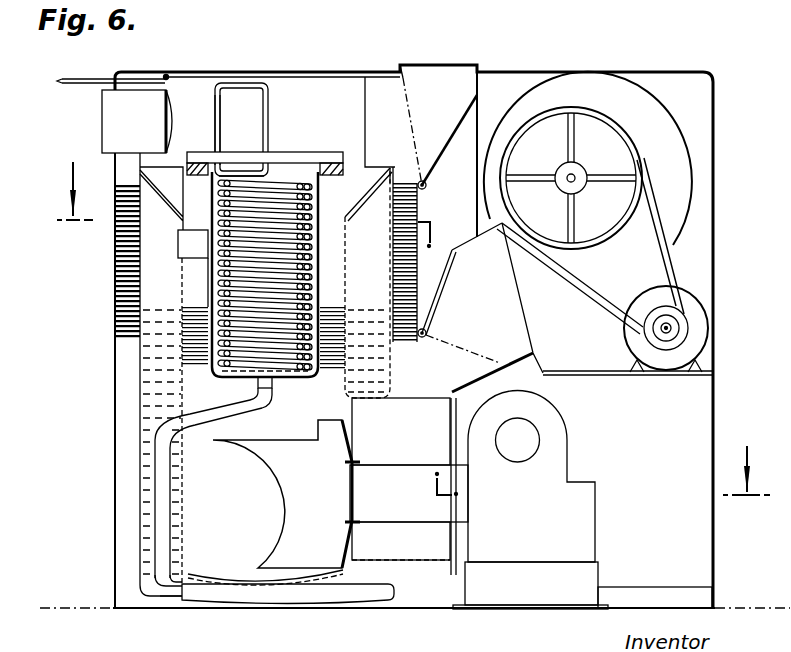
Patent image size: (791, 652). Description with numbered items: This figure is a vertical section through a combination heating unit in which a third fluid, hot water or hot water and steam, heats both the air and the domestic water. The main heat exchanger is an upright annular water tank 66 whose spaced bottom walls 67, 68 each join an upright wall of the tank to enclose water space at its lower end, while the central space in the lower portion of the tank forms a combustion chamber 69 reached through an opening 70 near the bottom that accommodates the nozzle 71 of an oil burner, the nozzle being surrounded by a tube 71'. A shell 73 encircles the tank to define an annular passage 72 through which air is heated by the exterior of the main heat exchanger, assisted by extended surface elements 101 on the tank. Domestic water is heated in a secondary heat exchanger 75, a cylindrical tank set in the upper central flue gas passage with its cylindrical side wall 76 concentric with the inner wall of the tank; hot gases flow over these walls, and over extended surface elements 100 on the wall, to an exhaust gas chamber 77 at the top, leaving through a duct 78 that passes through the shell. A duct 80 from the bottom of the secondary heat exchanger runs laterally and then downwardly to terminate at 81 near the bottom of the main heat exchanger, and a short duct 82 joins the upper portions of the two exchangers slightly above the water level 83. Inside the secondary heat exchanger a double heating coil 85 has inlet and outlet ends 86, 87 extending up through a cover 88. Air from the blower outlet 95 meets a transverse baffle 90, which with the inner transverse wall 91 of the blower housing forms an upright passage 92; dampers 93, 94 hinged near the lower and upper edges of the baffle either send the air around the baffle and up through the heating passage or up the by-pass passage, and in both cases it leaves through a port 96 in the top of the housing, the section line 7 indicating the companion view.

The section line 7- 7 is at (413, 345).
The annular water tank 66 is at (128, 508).
The bottom wall 67 is at (266, 582).
The bottom wall 68 is at (236, 606).
The combustion chamber 69 is at (300, 417).
The opening 70 is at (380, 402).
The nozzle 71 is at (406, 492).
The tube 71' is at (401, 544).
The annular passage 72 is at (115, 397).
The shell 73 is at (116, 466).
The secondary heat exchanger 75 is at (313, 141).
The cylindrical side wall 76 is at (323, 207).
The exhaust gas chamber 77 is at (288, 88).
The duct 78 is at (110, 113).
The duct 80 is at (238, 406).
The duct terminus 81 is at (183, 582).
The short duct 82 is at (203, 228).
The water level 83 is at (166, 306).
The double heating coil 85 is at (287, 180).
The inlet end 86 is at (263, 109).
The outlet end 87 is at (214, 109).
The cover 88 is at (200, 156).
The transverse baffle 90 is at (437, 205).
The inner transverse wall 91 is at (476, 182).
The upright passage 92 is at (462, 231).
The damper 93 is at (441, 278).
The damper 94 is at (460, 124).
The blower outlet 95 is at (501, 319).
The port 96 is at (457, 68).
The extended surface elements 100 is at (350, 304).
The extended surface elements 101 is at (114, 292).